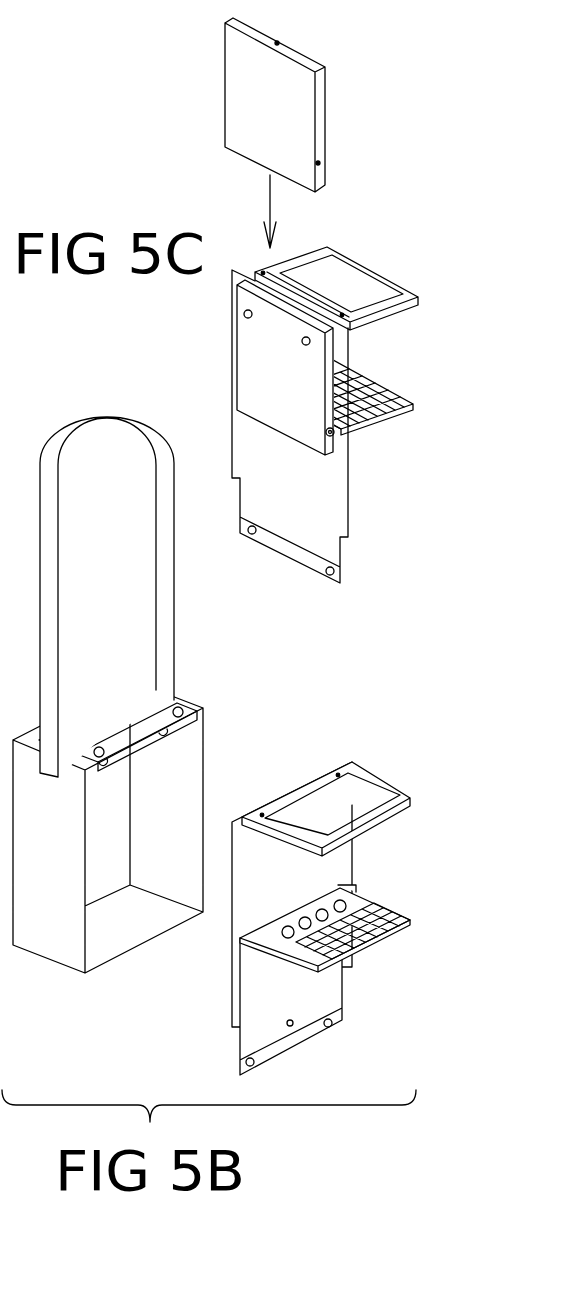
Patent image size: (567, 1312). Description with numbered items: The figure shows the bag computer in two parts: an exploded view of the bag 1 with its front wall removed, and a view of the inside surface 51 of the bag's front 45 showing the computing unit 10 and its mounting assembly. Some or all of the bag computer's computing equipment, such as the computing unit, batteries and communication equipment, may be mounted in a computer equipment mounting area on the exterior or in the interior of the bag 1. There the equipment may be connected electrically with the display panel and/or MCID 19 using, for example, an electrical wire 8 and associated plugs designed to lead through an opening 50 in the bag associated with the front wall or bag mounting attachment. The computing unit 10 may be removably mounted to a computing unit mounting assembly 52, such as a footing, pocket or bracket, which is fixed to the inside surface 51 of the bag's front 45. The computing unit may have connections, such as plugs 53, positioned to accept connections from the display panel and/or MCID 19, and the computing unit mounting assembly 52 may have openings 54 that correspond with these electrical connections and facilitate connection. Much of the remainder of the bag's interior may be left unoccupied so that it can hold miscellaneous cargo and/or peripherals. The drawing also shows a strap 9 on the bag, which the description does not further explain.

In FIG. 5B, the bag 1 is at (105, 684).
In FIG. 5C, the electrical wire 8 is at (290, 302).
In FIG. 5B, the carrying strap 9 is at (87, 597).
In FIG. 5C, the computing unit 10 is at (218, 132).
In FIG. 5B, the MCID 19 is at (372, 945).
In FIG. 5B, the bag's front 45 is at (230, 925).
In FIG. 5C, the opening 50 is at (333, 437).
In FIG. 5C, the inside surface 51 is at (292, 478).
In FIG. 5C, the computing unit mounting assembly 52 is at (263, 360).
In FIG. 5C, the plugs 53 is at (277, 43).
In FIG. 5C, the openings 54 is at (333, 422).